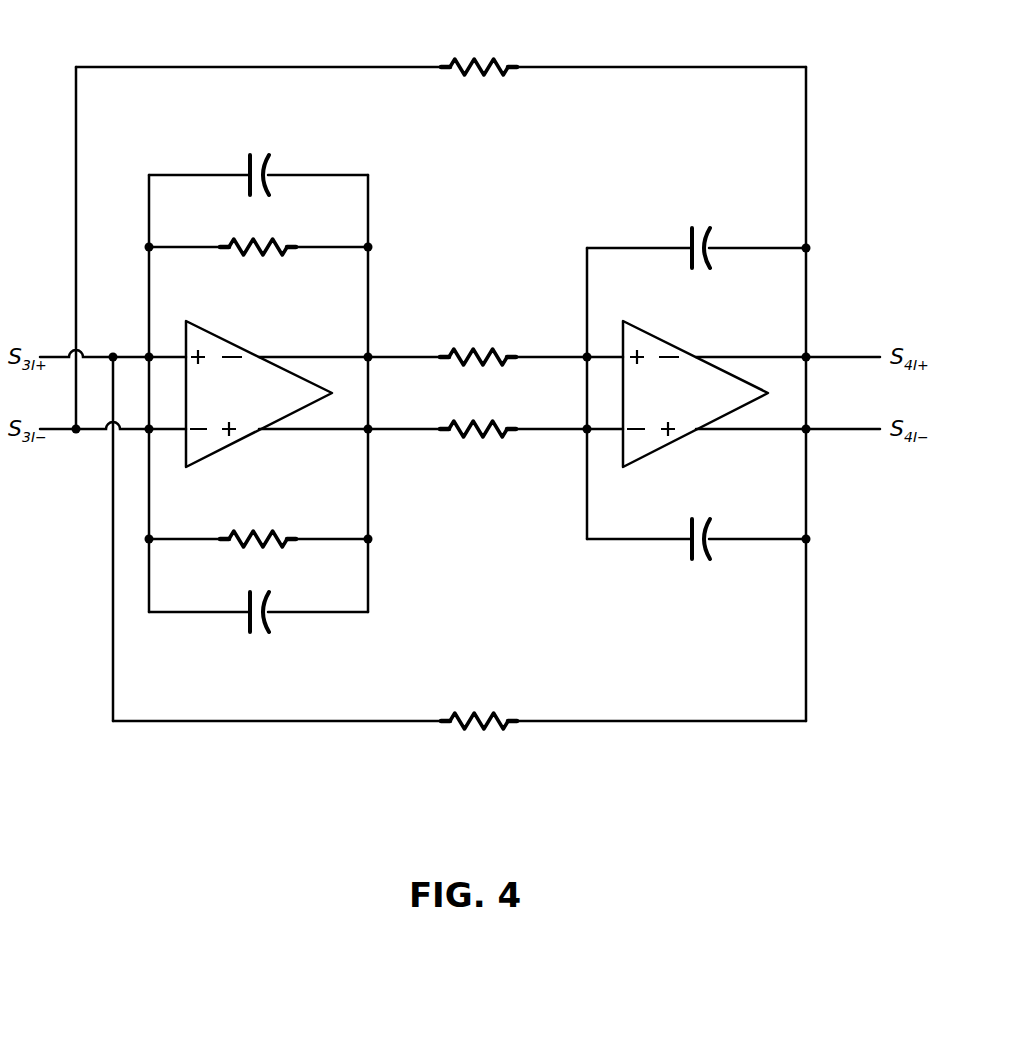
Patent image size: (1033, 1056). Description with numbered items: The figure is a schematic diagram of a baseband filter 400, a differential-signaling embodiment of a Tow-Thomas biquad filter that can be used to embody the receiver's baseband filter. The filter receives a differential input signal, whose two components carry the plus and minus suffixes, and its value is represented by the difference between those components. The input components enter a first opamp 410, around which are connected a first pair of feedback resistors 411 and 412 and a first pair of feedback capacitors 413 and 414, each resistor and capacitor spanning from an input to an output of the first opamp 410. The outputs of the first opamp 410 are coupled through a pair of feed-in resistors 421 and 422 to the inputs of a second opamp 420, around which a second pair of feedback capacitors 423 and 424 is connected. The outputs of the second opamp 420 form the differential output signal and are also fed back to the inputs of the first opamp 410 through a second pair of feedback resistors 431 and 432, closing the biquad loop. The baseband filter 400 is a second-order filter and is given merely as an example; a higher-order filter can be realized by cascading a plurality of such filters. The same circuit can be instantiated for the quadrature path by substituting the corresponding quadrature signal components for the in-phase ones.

The baseband filter 400 is at (144, 837).
The first opamp 410 is at (237, 344).
The feedback resistor 411 is at (270, 258).
The feedback resistor 412 is at (266, 530).
The feedback capacitor 413 is at (267, 165).
The feedback capacitor 414 is at (268, 629).
The second opamp 420 is at (678, 344).
The feed-in resistor 421 is at (474, 349).
The feed-in resistor 422 is at (483, 440).
The feedback capacitor 423 is at (709, 233).
The feedback capacitor 424 is at (709, 553).
The feedback resistor 431 is at (478, 57).
The feedback resistor 432 is at (488, 730).